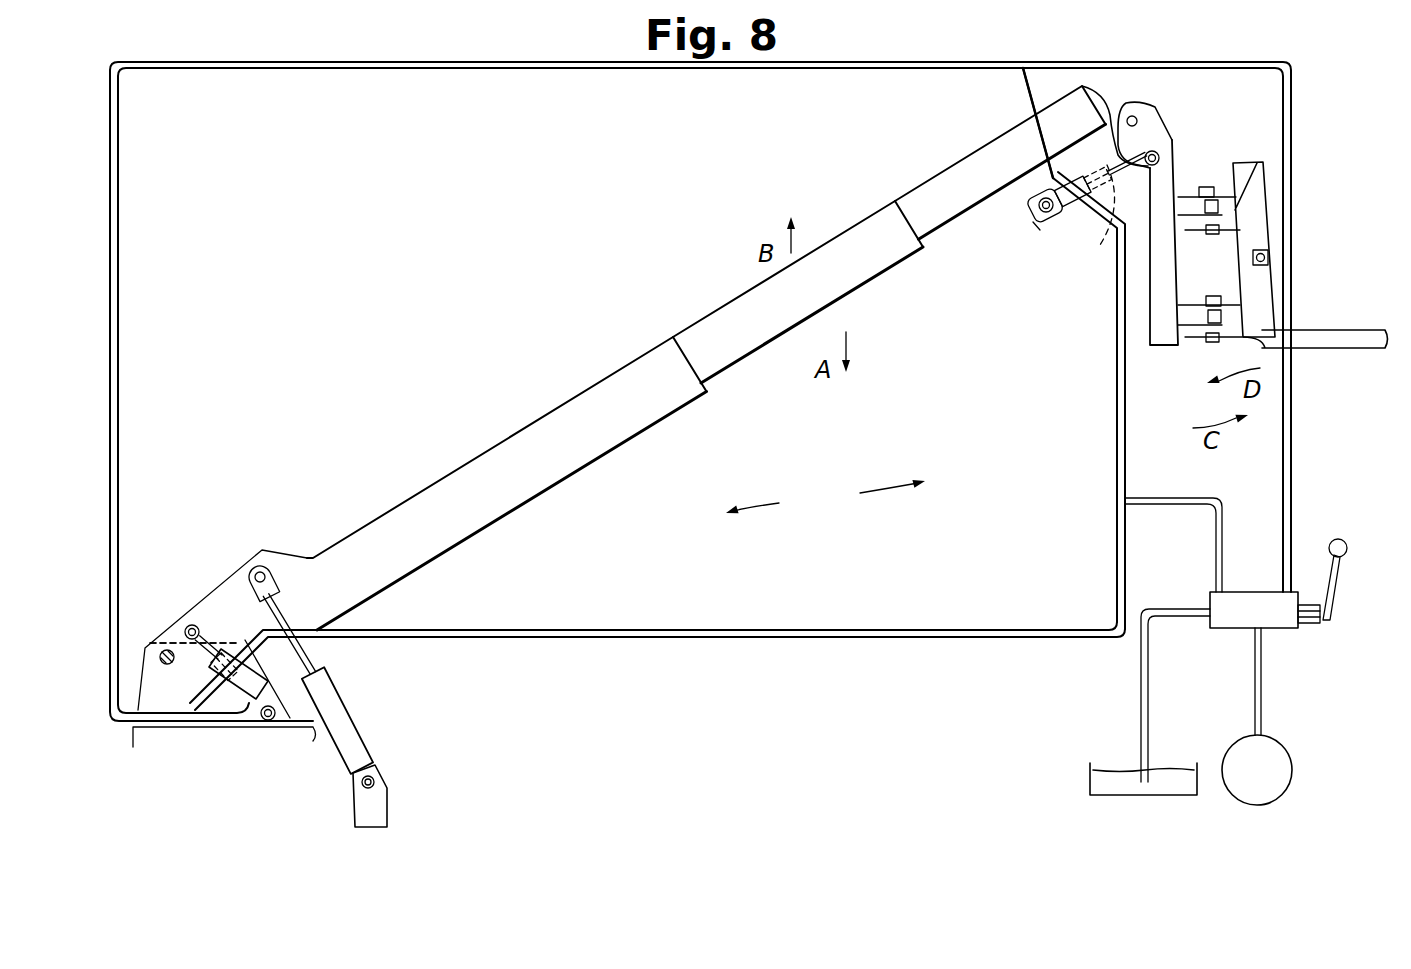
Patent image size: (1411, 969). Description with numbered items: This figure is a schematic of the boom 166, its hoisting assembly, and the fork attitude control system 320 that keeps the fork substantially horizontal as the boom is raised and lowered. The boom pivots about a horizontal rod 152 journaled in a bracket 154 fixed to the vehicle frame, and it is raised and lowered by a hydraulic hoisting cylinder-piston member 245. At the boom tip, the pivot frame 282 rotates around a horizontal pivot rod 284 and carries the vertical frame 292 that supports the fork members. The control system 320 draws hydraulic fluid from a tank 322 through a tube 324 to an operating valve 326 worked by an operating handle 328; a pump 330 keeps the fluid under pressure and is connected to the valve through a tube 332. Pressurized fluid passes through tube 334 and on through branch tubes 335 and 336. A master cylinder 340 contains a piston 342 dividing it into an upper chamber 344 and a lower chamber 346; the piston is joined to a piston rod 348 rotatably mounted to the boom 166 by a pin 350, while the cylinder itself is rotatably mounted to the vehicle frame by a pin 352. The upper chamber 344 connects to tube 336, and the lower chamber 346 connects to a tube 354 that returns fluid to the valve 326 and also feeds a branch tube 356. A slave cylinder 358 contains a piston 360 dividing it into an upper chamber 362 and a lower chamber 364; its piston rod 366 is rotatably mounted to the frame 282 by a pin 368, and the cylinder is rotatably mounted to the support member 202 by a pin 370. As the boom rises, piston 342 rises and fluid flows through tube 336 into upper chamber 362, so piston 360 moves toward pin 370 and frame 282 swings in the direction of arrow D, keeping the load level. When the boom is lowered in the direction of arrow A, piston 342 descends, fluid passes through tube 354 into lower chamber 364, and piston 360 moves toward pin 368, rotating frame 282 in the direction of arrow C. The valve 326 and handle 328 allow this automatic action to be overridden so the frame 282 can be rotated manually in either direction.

The horizontal rod 152 is at (160, 658).
The bracket 154 is at (143, 692).
The boom 166 is at (556, 386).
The support member 202 is at (1036, 222).
The hydraulic hoisting cylinder-piston member 245 is at (363, 730).
The pivot frame 282 is at (1190, 150).
The horizontal pivot rod 284 is at (1138, 121).
The vertical frame 292 is at (1268, 213).
The fork attitude control system 320 is at (825, 496).
The tank of hydraulic fluid 322 is at (1090, 782).
The tube 324 is at (1140, 693).
The operating valve 326 is at (1242, 628).
The operating handle 328 is at (1332, 608).
The pump 330 is at (1292, 778).
The tube 332 is at (1260, 705).
The tube 334 is at (1172, 498).
The branch tube 335 is at (1115, 447).
The branch tube 336 is at (750, 637).
The master cylinder 340 is at (224, 708).
The piston 342 is at (228, 672).
The upper chamber 344 is at (225, 650).
The lower chamber 346 is at (262, 700).
The piston rod 348 is at (205, 642).
The pin 350 is at (192, 625).
The pin 352 is at (283, 722).
The tube 354 is at (460, 62).
The branch tube 356 is at (1010, 110).
The slave cylinder 358 is at (1070, 215).
The piston 360 is at (1091, 220).
The upper chamber 362 is at (1097, 93).
The lower chamber 364 is at (1062, 222).
The piston rod 366 is at (1112, 100).
The pin 368 is at (1160, 154).
The pin 370 is at (1036, 216).